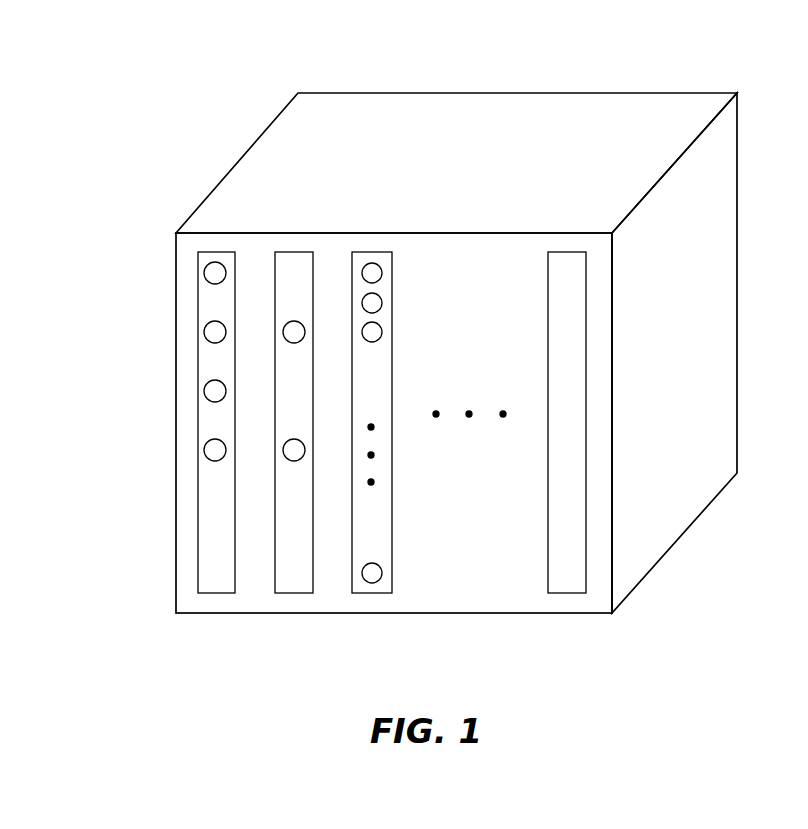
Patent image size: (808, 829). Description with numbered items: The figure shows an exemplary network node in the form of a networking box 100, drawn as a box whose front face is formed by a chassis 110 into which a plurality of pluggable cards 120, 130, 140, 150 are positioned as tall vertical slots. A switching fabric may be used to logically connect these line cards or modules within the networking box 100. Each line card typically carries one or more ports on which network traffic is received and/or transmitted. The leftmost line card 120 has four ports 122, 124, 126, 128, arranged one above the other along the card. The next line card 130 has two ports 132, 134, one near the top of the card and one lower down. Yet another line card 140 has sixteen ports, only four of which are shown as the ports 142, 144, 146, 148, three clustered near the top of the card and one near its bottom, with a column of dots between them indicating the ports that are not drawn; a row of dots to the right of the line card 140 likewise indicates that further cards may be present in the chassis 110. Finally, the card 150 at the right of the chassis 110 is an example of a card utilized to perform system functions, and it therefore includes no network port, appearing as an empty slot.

The networking box 100 is at (216, 63).
The chassis 110 is at (212, 189).
The line card 120 is at (198, 537).
The port 122 is at (215, 273).
The port 124 is at (215, 332).
The port 126 is at (215, 391).
The port 128 is at (215, 450).
The line card 130 is at (295, 593).
The port 132 is at (294, 321).
The port 134 is at (294, 452).
The line card 140 is at (392, 513).
The port 142 is at (372, 273).
The port 144 is at (372, 303).
The port 146 is at (372, 332).
The port 148 is at (372, 573).
The card 150 is at (565, 593).